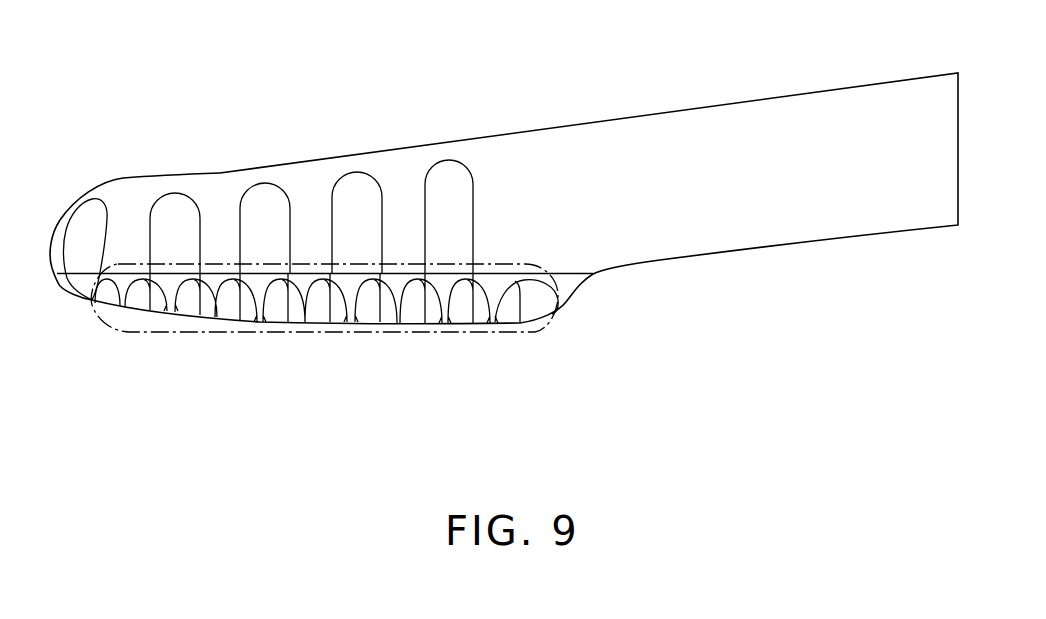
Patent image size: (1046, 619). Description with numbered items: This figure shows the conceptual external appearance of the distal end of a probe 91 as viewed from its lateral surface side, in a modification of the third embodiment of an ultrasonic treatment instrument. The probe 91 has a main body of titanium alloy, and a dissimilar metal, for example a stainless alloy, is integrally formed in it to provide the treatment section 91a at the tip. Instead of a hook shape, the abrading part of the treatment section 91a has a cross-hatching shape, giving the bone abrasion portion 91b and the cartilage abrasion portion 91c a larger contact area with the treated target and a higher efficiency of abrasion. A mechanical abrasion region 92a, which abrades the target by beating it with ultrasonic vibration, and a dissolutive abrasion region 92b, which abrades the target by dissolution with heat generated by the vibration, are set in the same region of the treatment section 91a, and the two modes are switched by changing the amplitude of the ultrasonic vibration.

The probe 91 is at (862, 86).
The treatment section 91a is at (168, 368).
The bone abrasion portion 91b is at (298, 317).
The cartilage abrasion portion 91c is at (53, 287).
The mechanical abrasion region 92a is at (358, 324).
The dissolutive abrasion region 92b is at (324, 298).